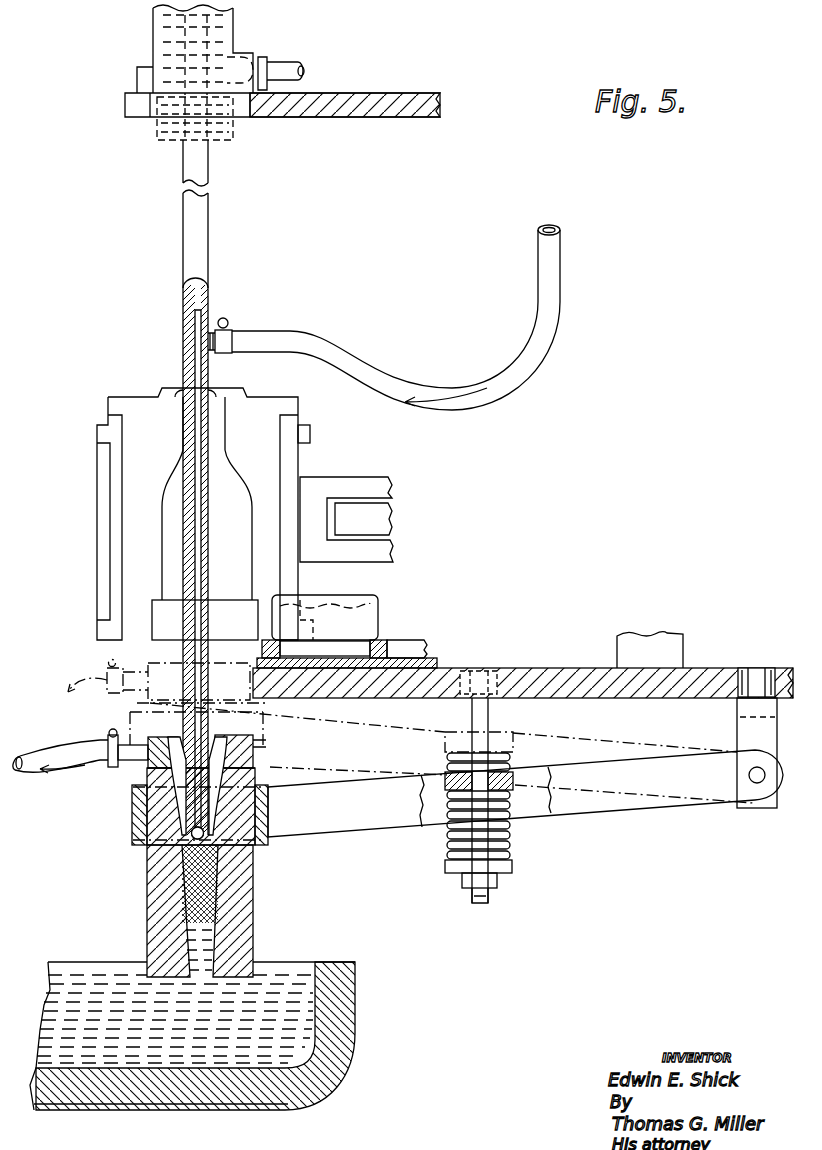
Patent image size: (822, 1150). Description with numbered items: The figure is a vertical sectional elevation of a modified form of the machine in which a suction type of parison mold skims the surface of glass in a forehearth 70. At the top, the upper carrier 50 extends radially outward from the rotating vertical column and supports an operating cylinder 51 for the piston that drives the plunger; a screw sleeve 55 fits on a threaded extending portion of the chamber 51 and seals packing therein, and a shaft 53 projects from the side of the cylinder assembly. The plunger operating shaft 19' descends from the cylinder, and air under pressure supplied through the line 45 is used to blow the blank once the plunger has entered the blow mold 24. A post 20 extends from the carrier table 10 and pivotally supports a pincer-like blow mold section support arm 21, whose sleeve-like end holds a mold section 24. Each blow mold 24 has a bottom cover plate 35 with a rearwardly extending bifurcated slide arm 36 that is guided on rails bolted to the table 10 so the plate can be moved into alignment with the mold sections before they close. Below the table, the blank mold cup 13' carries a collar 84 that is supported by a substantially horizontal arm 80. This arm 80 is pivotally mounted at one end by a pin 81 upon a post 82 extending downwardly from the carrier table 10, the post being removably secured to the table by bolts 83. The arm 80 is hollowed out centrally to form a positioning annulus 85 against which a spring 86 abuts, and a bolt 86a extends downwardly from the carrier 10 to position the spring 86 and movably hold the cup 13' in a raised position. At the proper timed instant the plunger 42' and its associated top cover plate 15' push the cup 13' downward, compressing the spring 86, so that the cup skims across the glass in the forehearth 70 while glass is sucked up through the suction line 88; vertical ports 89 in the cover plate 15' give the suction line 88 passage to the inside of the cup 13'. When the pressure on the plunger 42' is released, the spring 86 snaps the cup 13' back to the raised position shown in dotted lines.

The operating cylinder 51 is at (153, 25).
The drive shaft 53 is at (270, 67).
The screw sleeve 55 is at (157, 130).
The upper carrier 50 is at (380, 113).
The plunger rod 19' is at (173, 489).
The air line 45 is at (326, 345).
The blow mold section 24 is at (263, 458).
The blow mold section support arm 21 is at (385, 548).
The bottom cover plate 35 is at (372, 600).
The bifurcated slide arm 36 is at (405, 640).
The carrier table 10 is at (516, 668).
The post 20 is at (617, 652).
The bolt 83 is at (753, 668).
The post 82 is at (737, 723).
The pin 81 is at (759, 784).
The arm 80 is at (604, 763).
The positioning annulus 85 is at (447, 773).
The spring 86 is at (510, 836).
The bolt 86a is at (478, 892).
The vertical port 89 is at (150, 750).
The suction line 88 is at (37, 757).
The top cover plate 15' is at (160, 782).
The blank mold cup 13' is at (176, 857).
The collar 84 is at (132, 808).
The plunger 42' is at (255, 815).
The forehearth 70 is at (340, 1000).